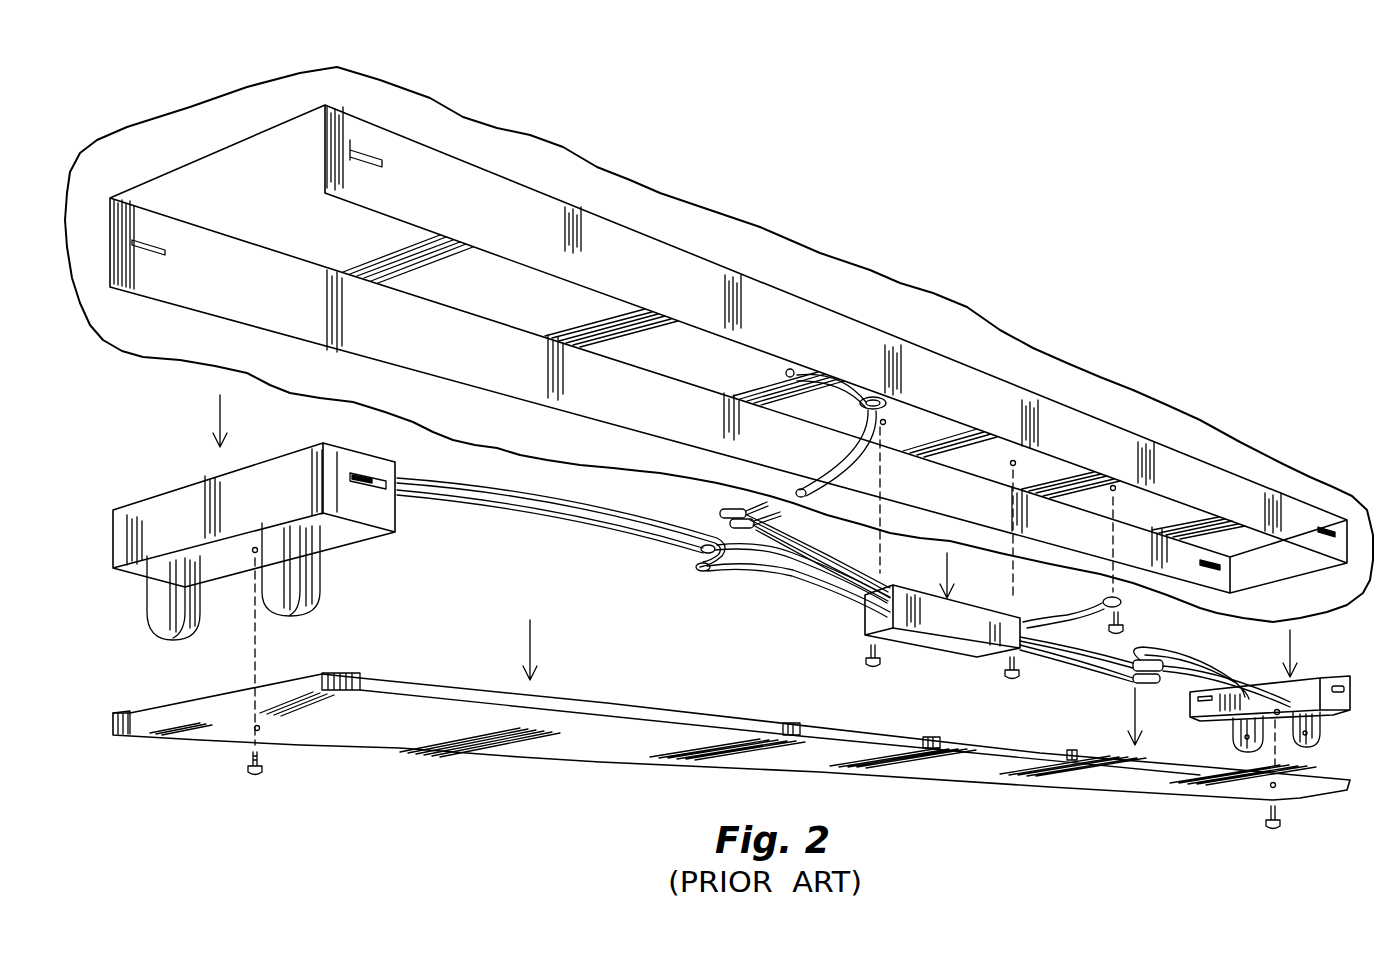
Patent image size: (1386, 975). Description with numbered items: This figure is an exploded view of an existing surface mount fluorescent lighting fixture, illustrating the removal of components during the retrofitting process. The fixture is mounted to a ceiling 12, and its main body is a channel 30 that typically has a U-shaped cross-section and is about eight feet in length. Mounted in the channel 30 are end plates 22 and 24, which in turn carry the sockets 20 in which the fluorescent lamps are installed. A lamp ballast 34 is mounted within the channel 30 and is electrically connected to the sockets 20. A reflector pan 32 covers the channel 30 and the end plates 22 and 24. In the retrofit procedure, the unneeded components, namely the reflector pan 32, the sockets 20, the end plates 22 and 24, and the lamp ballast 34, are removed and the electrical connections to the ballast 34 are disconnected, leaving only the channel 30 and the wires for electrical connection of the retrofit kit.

The ceiling 12 is at (767, 240).
The channel 30 is at (638, 253).
The end plate 22 is at (187, 495).
The sockets 20 is at (172, 642).
The lamp ballast 34 is at (923, 645).
The end plate 24 is at (1303, 687).
The reflector pan 32 is at (667, 768).